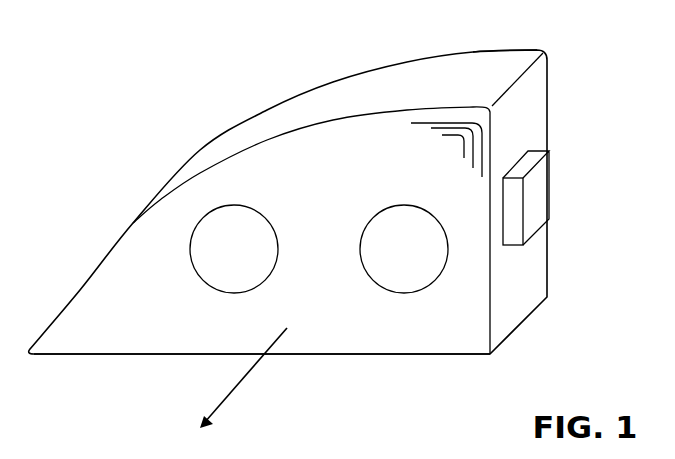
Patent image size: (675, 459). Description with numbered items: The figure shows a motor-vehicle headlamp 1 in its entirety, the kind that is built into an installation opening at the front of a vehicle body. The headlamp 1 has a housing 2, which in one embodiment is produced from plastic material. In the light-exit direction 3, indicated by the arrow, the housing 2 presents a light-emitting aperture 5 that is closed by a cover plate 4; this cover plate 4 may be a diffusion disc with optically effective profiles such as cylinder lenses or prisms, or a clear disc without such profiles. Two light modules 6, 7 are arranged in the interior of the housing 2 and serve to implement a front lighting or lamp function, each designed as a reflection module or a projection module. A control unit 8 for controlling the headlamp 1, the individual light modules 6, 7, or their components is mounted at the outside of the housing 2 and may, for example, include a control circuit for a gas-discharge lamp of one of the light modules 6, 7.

The headlamp 1 is at (185, 93).
The housing 2 is at (463, 80).
The light-exit direction 3 is at (237, 382).
The cover plate 4 is at (473, 142).
The light-emitting aperture 5 is at (423, 328).
The light module 6 is at (234, 249).
The light module 7 is at (404, 249).
The control unit 8 is at (538, 192).